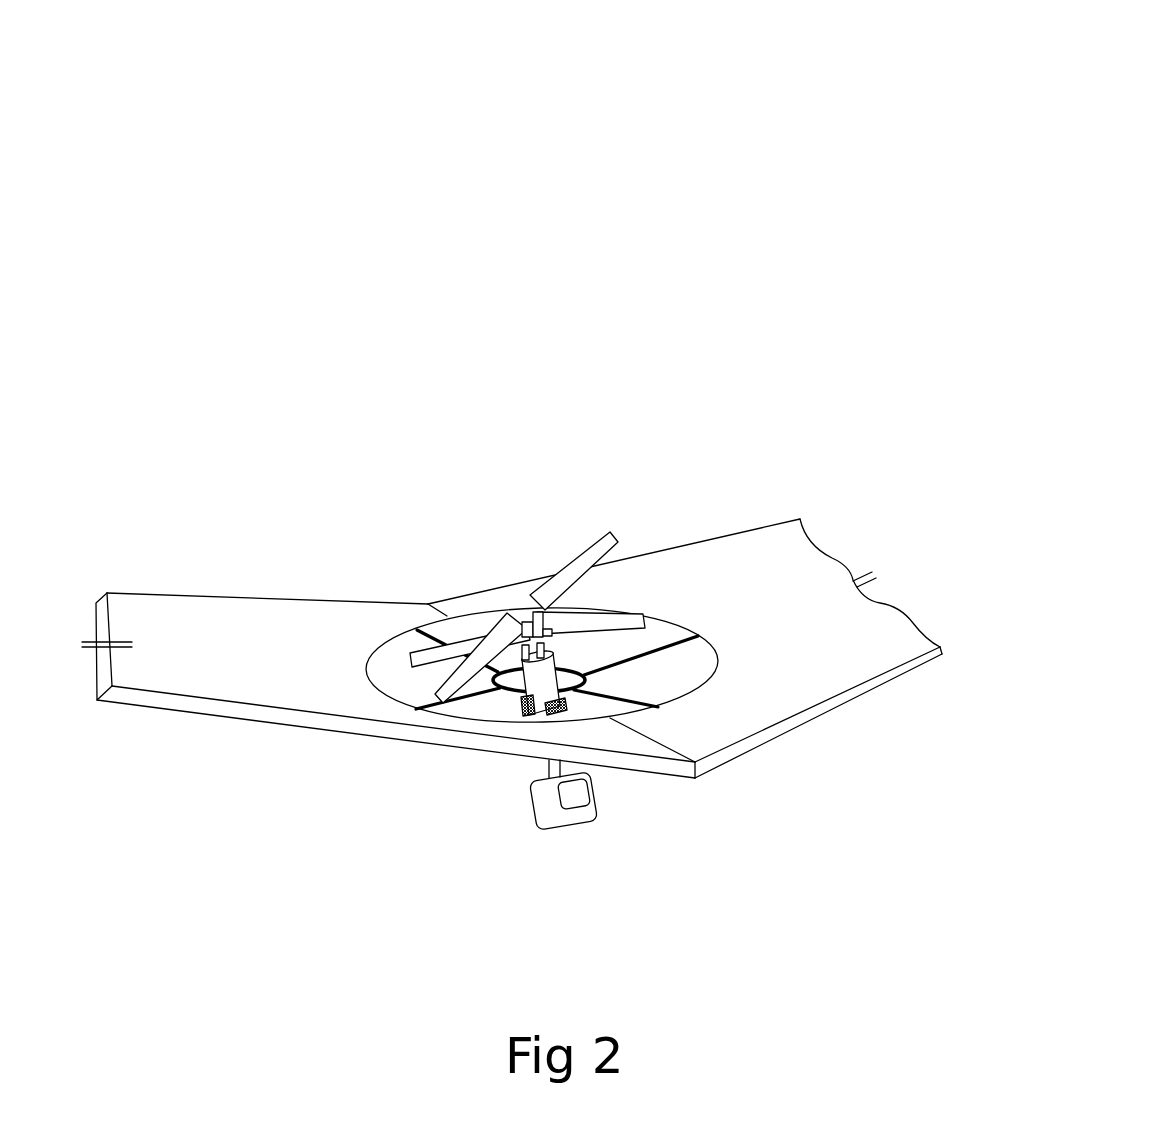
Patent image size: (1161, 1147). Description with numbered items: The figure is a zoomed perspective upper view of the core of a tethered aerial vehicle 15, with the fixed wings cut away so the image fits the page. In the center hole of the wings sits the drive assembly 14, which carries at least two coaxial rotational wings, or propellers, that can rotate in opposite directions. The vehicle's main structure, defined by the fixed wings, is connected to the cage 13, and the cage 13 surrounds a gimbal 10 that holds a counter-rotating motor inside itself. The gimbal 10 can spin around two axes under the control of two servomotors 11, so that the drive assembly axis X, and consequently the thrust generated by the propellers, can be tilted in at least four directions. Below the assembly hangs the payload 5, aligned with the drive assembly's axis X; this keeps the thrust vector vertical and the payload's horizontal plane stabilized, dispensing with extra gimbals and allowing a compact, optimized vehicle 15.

The payload 5 is at (543, 812).
The gimbal 10 is at (562, 667).
The servomotors 11 is at (518, 708).
The cage 13 is at (591, 684).
The drive assembly 14 is at (464, 565).
The vehicle 15 is at (713, 192).